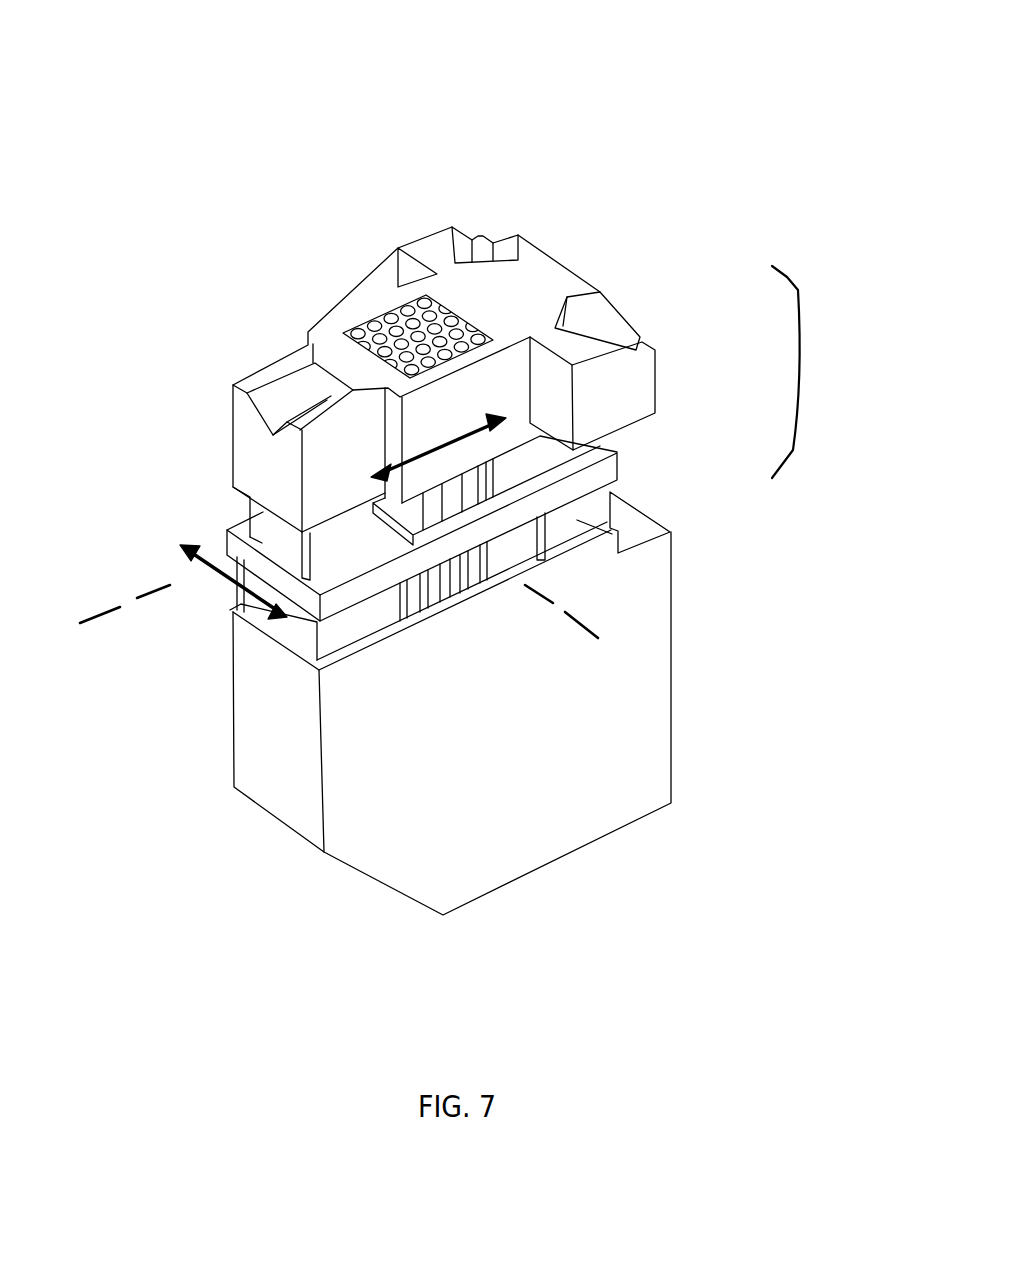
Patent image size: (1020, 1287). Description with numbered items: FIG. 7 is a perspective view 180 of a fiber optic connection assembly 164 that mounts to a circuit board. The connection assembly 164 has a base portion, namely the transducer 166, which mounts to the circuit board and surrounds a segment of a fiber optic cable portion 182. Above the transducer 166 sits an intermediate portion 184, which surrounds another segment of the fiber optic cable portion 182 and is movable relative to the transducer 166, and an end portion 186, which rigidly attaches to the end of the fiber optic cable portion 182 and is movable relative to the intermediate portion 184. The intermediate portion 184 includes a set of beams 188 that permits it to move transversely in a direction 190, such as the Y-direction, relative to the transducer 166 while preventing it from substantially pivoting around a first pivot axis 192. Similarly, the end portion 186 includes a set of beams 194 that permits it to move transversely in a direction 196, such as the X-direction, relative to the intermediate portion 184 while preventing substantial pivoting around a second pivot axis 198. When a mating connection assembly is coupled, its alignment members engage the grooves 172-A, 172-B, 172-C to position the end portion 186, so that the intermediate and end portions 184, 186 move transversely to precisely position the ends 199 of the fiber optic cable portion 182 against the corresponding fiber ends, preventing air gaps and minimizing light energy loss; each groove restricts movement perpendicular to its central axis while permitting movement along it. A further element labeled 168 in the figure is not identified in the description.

The fiber optic connection assembly 164 is at (215, 210).
The transducer 166 is at (587, 847).
The positioning stage 168 is at (798, 378).
The groove 172-A is at (287, 395).
The groove 172-B is at (487, 243).
The groove 172-C is at (613, 322).
The perspective view 180 is at (757, 87).
The fiber optic cable portion 182 is at (495, 511).
The intermediate portion 184 is at (620, 465).
The end portion 186 is at (657, 401).
The set of beams 188 is at (342, 637).
The direction 190 is at (208, 563).
The first pivot axis 192 is at (567, 620).
The set of beams 194 is at (263, 542).
The direction 196 is at (448, 445).
The second pivot axis 198 is at (107, 613).
The ends of the fiber optic cable portion 199 is at (387, 318).